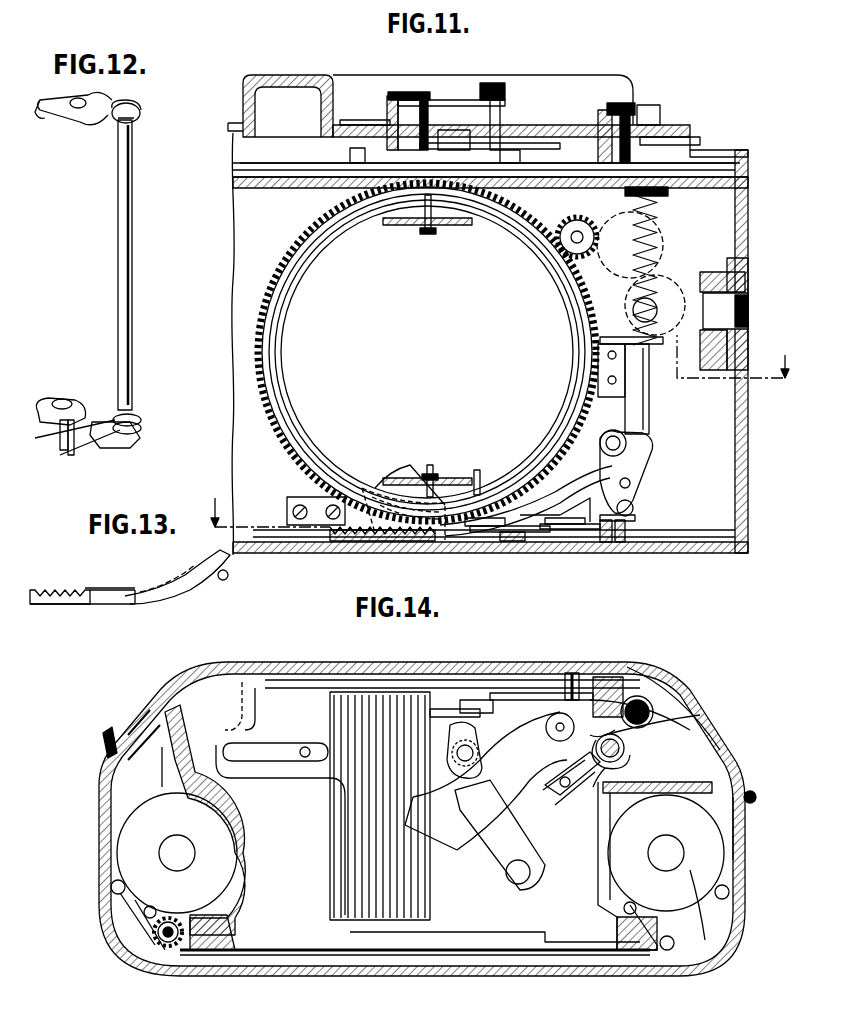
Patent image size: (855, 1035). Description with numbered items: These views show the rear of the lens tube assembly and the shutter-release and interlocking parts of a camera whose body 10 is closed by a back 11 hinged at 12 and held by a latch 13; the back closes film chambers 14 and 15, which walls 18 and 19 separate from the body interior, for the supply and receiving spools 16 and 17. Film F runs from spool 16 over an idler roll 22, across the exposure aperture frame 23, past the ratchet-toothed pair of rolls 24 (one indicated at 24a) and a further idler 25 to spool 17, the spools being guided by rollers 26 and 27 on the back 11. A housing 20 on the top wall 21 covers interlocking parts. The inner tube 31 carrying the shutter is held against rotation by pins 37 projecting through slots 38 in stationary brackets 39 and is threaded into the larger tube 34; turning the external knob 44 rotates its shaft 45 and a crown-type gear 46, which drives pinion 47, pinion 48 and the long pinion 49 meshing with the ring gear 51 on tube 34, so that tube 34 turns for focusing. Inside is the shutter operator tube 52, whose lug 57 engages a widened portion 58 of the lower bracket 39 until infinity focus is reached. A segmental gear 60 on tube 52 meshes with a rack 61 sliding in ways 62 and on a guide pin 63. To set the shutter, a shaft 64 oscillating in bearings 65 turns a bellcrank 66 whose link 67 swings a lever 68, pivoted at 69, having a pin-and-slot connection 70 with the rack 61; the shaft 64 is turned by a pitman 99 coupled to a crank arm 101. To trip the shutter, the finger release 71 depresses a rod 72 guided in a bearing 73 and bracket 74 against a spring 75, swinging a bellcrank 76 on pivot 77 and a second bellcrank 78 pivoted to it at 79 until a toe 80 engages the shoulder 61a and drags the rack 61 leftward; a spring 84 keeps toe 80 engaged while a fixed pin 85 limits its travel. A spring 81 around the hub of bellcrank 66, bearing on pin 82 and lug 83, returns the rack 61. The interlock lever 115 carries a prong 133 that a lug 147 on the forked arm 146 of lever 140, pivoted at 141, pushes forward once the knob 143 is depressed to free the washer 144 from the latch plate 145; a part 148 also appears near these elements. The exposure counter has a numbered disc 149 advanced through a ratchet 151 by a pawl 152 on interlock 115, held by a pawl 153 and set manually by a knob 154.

In FIG. 11, the camera body 10 is at (745, 450).
In FIG. 14, the camera body 10 is at (725, 745).
In FIG. 14, the back 11 is at (598, 970).
In FIG. 14, the hinge 12 is at (757, 797).
In FIG. 14, the latch 13 is at (110, 735).
In FIG. 11, the film chamber 14 is at (500, 426).
In FIG. 14, the film chamber 14 is at (713, 923).
In FIG. 14, the film chamber 15 is at (116, 922).
In FIG. 14, the film supply spool 16 is at (715, 848).
In FIG. 14, the receiving spool 17 is at (128, 858).
In FIG. 14, the wall 18 is at (695, 782).
In FIG. 14, the wall 19 is at (243, 868).
In FIG. 11, the housing 20 is at (298, 82).
In FIG. 11, the top wall 21 is at (233, 181).
In FIG. 14, the idler roll 22 is at (667, 950).
In FIG. 14, the exposure aperture frame 23 is at (226, 955).
In FIG. 14, the ratchet-toothed pair of rolls 24 is at (165, 946).
In FIG. 14, the roller shaft 24a is at (170, 946).
In FIG. 14, the idler 25 is at (140, 950).
In FIG. 14, the roller 26 is at (730, 892).
In FIG. 14, the roller 27 is at (110, 890).
In FIG. 11, the tube 31 is at (572, 378).
In FIG. 11, the larger tube 34 is at (578, 407).
In FIG. 11, the pins 37 is at (433, 470).
In FIG. 11, the slots 38 is at (425, 478).
In FIG. 11, the stationary brackets 39 is at (392, 478).
In FIG. 11, the external knob 44 is at (748, 268).
In FIG. 11, the shaft 45 is at (748, 311).
In FIG. 11, the crown-type gear 46 is at (700, 272).
In FIG. 11, the pinion 47 is at (665, 285).
In FIG. 11, the pinion 48 is at (660, 255).
In FIG. 11, the long pinion 49 is at (590, 232).
In FIG. 11, the ring gear 51 is at (302, 246).
In FIG. 11, the shutter operator 52 is at (298, 312).
In FIG. 11, the lug 57 is at (477, 470).
In FIG. 11, the widened portion 58 is at (455, 470).
In FIG. 11, the segmental gear 60 is at (432, 540).
In FIG. 11, the rack 61 is at (353, 553).
In FIG. 13, the rack 61 is at (59, 606).
In FIG. 14, the rack 61 is at (330, 901).
In FIG. 13, the shoulder 61a is at (130, 590).
In FIG. 14, the shoulder 61a is at (465, 708).
In FIG. 11, the ways 62 is at (300, 497).
In FIG. 14, the ways 62 is at (296, 680).
In FIG. 14, the guide pin 63 is at (305, 761).
In FIG. 11, the shaft 64 is at (608, 545).
In FIG. 12, the shaft 64 is at (132, 315).
In FIG. 14, the shaft 64 is at (625, 749).
In FIG. 11, the bearings 65 is at (630, 545).
In FIG. 14, the bearings 65 is at (630, 762).
In FIG. 11, the bellcrank 66 is at (590, 545).
In FIG. 12, the bellcrank 66 is at (125, 448).
In FIG. 14, the bellcrank 66 is at (566, 713).
In FIG. 11, the link 67 is at (555, 535).
In FIG. 12, the link 67 is at (50, 395).
In FIG. 14, the link 67 is at (497, 808).
In FIG. 11, the lever 68 is at (505, 535).
In FIG. 14, the lever 68 is at (480, 855).
In FIG. 11, the pivot 69 is at (515, 545).
In FIG. 14, the pivot 69 is at (510, 884).
In FIG. 11, the pin-and-slot connection 70 is at (470, 530).
In FIG. 14, the pin-and-slot connection 70 is at (455, 775).
In FIG. 11, the finger release 71 is at (660, 115).
In FIG. 11, the rod 72 is at (650, 410).
In FIG. 14, the rod 72 is at (657, 707).
In FIG. 11, the bearing 73 is at (668, 193).
In FIG. 11, the bracket 74 is at (630, 338).
In FIG. 14, the bracket 74 is at (650, 718).
In FIG. 11, the spring 75 is at (638, 300).
In FIG. 14, the spring 75 is at (655, 700).
In FIG. 11, the bellcrank 76 is at (640, 467).
In FIG. 14, the bellcrank 76 is at (600, 680).
In FIG. 11, the pivot 77 is at (604, 452).
In FIG. 14, the pivot 77 is at (618, 690).
In FIG. 11, the second bellcrank 78 is at (633, 507).
In FIG. 14, the second bellcrank 78 is at (518, 693).
In FIG. 11, the pivot 79 is at (630, 483).
In FIG. 11, the toe 80 is at (490, 500).
In FIG. 13, the toe 80 is at (148, 605).
In FIG. 14, the toe 80 is at (475, 700).
In FIG. 12, the spring 81 is at (141, 416).
In FIG. 14, the spring 81 is at (593, 787).
In FIG. 12, the pin 82 is at (68, 455).
In FIG. 14, the pin 82 is at (560, 795).
In FIG. 12, the lug 83 is at (80, 420).
In FIG. 14, the lug 83 is at (570, 778).
In FIG. 11, the spring 84 is at (610, 397).
In FIG. 14, the spring 84 is at (645, 698).
In FIG. 11, the fixed pin 85 is at (568, 540).
In FIG. 14, the fixed pin 85 is at (572, 673).
In FIG. 12, the pitman 99 is at (46, 165).
In FIG. 12, the crank arm 101 is at (113, 118).
In FIG. 11, the interlock 115 is at (272, 153).
In FIG. 11, the prong 133 is at (333, 153).
In FIG. 11, the lever 140 is at (394, 95).
In FIG. 11, the pivot 141 is at (424, 96).
In FIG. 11, the knob 143 is at (497, 84).
In FIG. 11, the washer 144 is at (520, 128).
In FIG. 11, the notched latch plate 145 is at (448, 105).
In FIG. 11, the forked arm 146 is at (386, 125).
In FIG. 11, the lug 147 is at (350, 155).
In FIG. 11, the block 148 is at (470, 149).
In FIG. 11, the numbered disc 149 is at (700, 135).
In FIG. 11, the ratchet 151 is at (700, 146).
In FIG. 11, the pawl 152 is at (520, 157).
In FIG. 11, the holding pawl 153 is at (596, 130).
In FIG. 11, the knob 154 is at (632, 108).
In FIG. 14, the film F is at (535, 957).